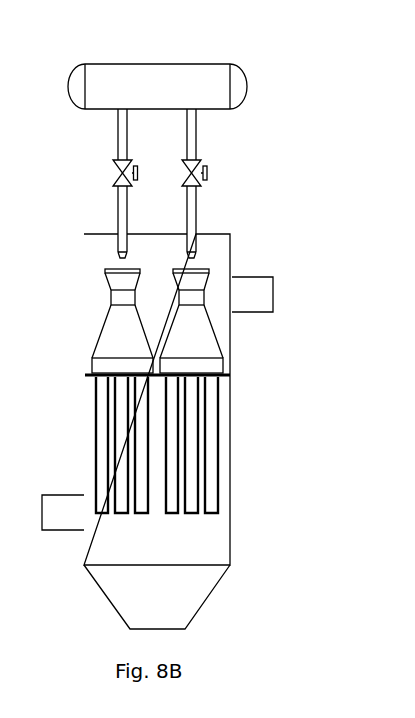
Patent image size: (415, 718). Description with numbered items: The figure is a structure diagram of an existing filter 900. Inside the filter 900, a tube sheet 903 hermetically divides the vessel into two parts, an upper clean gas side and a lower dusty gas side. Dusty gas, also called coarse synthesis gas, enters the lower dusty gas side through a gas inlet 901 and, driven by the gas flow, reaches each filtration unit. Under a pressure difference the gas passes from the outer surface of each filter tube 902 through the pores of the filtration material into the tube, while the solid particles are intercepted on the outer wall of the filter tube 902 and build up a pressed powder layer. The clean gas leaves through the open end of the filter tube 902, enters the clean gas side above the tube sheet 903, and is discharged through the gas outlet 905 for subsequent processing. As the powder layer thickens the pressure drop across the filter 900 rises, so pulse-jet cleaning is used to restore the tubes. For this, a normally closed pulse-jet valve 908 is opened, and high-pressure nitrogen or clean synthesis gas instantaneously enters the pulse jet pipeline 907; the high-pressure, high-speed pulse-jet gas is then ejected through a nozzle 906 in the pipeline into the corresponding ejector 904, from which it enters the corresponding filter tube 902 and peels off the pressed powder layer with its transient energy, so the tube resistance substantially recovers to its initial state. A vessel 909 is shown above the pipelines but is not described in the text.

The filter 900 is at (218, 320).
The gas inlet 901 is at (63, 512).
The filter tube 902 is at (213, 482).
The tube sheet 903 is at (230, 373).
The ejector 904 is at (110, 345).
The gas outlet 905 is at (252, 293).
The nozzle 906 is at (195, 255).
The pulse jet pipeline 907 is at (122, 212).
The pulse-jet valve 908 is at (207, 170).
The compressed air tank 909 is at (195, 88).